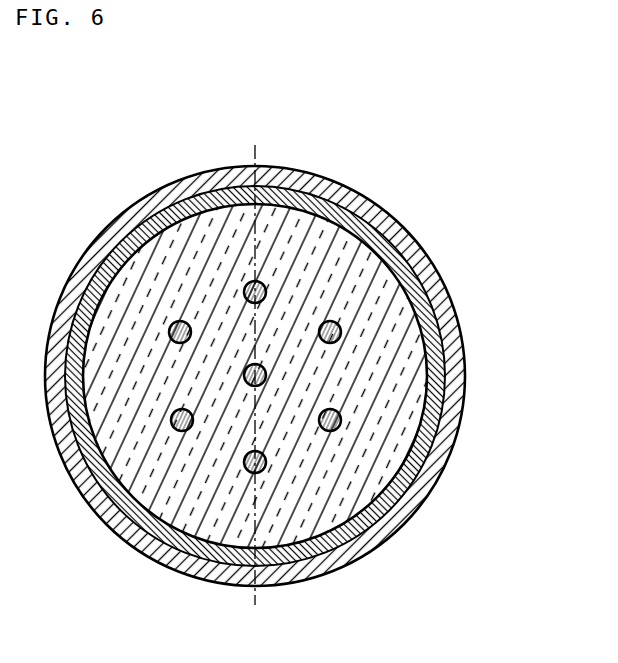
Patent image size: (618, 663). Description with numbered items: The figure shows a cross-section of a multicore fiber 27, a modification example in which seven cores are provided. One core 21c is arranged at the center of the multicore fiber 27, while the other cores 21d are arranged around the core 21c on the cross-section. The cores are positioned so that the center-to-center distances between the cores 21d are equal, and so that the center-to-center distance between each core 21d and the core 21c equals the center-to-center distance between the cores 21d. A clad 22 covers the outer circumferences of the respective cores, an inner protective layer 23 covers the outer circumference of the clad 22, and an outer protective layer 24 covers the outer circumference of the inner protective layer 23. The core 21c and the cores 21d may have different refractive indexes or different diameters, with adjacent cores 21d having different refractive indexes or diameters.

The multicore fiber 27 is at (461, 128).
The outer protective layer 24 is at (460, 441).
The inner protective layer 23 is at (464, 401).
The clad 22 is at (338, 413).
The core 21c is at (264, 367).
The cores 21d is at (171, 322).